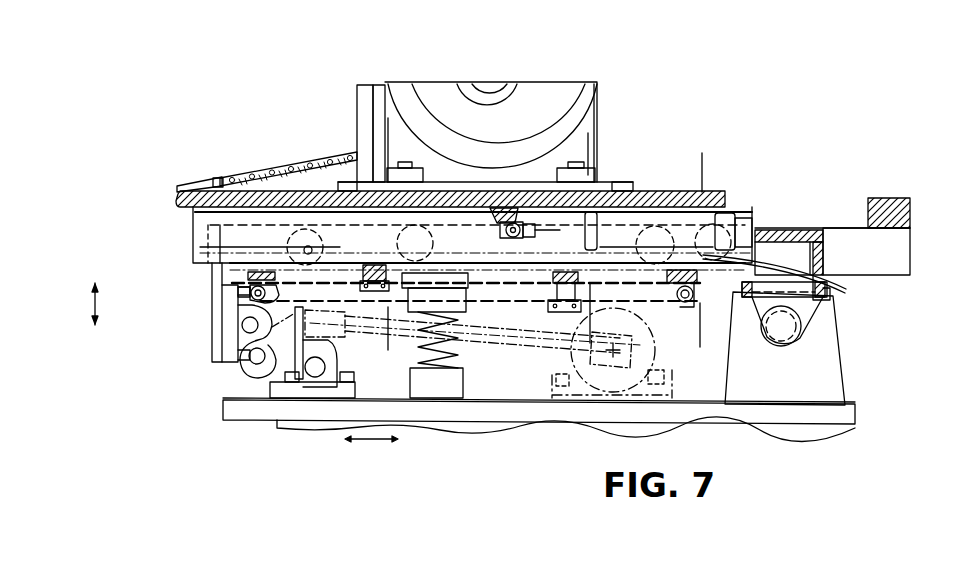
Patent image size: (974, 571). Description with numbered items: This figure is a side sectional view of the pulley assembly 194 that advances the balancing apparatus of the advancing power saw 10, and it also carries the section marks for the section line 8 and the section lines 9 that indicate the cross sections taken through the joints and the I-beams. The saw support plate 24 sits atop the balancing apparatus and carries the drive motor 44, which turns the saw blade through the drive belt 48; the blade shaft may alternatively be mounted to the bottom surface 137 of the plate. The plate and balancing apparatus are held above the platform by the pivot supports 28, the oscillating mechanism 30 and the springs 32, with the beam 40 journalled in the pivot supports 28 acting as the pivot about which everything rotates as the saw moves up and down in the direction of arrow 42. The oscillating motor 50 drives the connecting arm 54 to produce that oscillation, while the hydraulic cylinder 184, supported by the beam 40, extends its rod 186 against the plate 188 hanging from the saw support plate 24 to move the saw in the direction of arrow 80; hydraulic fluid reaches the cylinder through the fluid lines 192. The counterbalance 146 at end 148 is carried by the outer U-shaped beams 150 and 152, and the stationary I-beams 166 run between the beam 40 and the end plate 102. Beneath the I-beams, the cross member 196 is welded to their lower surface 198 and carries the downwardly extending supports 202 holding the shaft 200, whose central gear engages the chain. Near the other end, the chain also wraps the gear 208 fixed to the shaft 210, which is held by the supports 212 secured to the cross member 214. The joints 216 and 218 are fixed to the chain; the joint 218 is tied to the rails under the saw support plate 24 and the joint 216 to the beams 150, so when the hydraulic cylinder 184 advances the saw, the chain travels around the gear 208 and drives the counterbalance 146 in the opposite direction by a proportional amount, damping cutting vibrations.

The section line 8- 8 is at (700, 338).
The section line 9- 9 is at (588, 140).
The advancing power saw 10 is at (398, 127).
The saw support plate 24 is at (655, 190).
The pivot supports 28 is at (843, 378).
The oscillating mechanism 30 is at (236, 391).
The springs 32 is at (445, 388).
The beam 40 is at (813, 303).
The arrow 42 is at (97, 298).
The drive motor 44 is at (541, 90).
The drive belt 48 is at (272, 168).
The oscillating motor 50 is at (680, 377).
The connecting arm 54 is at (506, 343).
The arrow 80 is at (372, 442).
The balancing apparatus end plate 102 is at (222, 357).
The bottom surface 137 is at (178, 190).
The counterbalance 146 is at (885, 200).
The end 148 is at (910, 255).
The U-shaped beams 150 is at (210, 225).
The U-shaped beams 152 is at (216, 180).
The I-beams 166 is at (613, 203).
The hydraulic cylinder 184 is at (715, 222).
The rod 186 is at (553, 215).
The plate 188 is at (500, 234).
The fluid lines 192 is at (848, 291).
The pulley assembly 194 is at (698, 300).
The cross member 196 is at (750, 262).
The lower surface 198 is at (674, 244).
The shaft 200 is at (674, 301).
The supports 202 is at (732, 302).
The gear 208 is at (268, 276).
The shaft 210 is at (250, 272).
The supports 212 is at (240, 293).
The cross member 214 is at (240, 279).
The joint 216 is at (546, 296).
The joint 218 is at (372, 266).